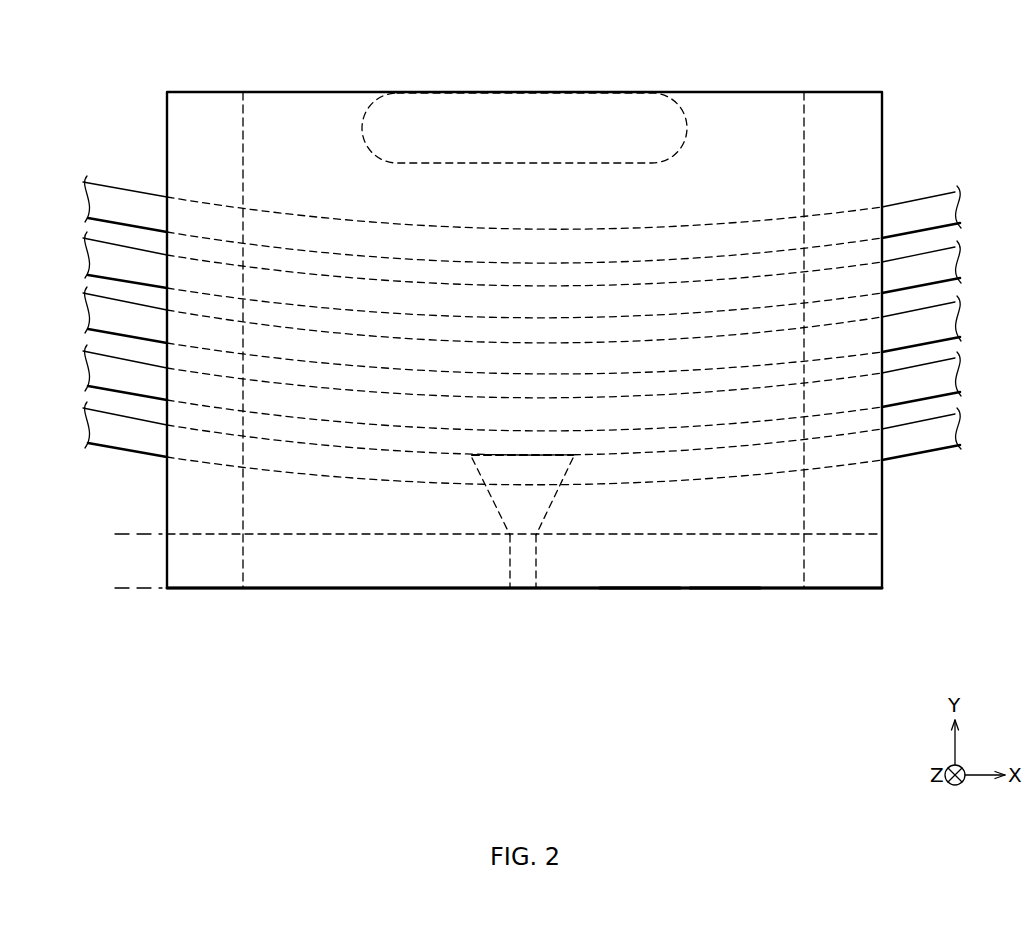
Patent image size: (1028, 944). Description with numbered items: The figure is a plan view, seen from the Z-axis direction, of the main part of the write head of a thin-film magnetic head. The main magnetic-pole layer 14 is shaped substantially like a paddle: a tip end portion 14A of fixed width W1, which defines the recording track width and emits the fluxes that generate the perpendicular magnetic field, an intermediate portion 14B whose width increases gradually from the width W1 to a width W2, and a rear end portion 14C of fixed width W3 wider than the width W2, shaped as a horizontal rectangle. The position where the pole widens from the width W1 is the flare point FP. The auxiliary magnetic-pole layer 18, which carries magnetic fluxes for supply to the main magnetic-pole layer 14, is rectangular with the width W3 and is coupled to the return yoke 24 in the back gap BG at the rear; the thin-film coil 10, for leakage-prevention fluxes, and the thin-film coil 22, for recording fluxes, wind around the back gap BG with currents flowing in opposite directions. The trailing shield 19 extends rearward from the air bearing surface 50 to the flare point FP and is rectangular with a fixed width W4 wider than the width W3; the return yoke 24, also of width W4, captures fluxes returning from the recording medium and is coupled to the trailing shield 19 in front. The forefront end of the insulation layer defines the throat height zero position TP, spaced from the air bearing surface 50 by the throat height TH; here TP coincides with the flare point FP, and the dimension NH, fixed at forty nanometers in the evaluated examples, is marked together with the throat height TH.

The thin-film coil 10 is at (522, 306).
The thin-film coil 22 is at (136, 203).
The air bearing surface 50 is at (355, 592).
The back gap BG is at (514, 122).
The auxiliary magnetic-pole layer 18 is at (788, 403).
The main magnetic-pole layer 14 is at (736, 523).
The tip end portion 14A is at (528, 558).
The intermediate portion 14B is at (533, 512).
The rear end portion 14C is at (788, 450).
The trailing shield 19 is at (635, 583).
The return yoke 24 is at (713, 585).
The throat height zero position TP is at (470, 514).
The flare point FP is at (103, 534).
The throat height TH is at (117, 561).
The NH dimension NH is at (139, 534).
The width of tip end portion W1 is at (536, 588).
The width at rear of intermediate portion W2 is at (573, 455).
The width of rear end portion W3 is at (804, 588).
The width of trailing shield and return yoke W4 is at (882, 588).